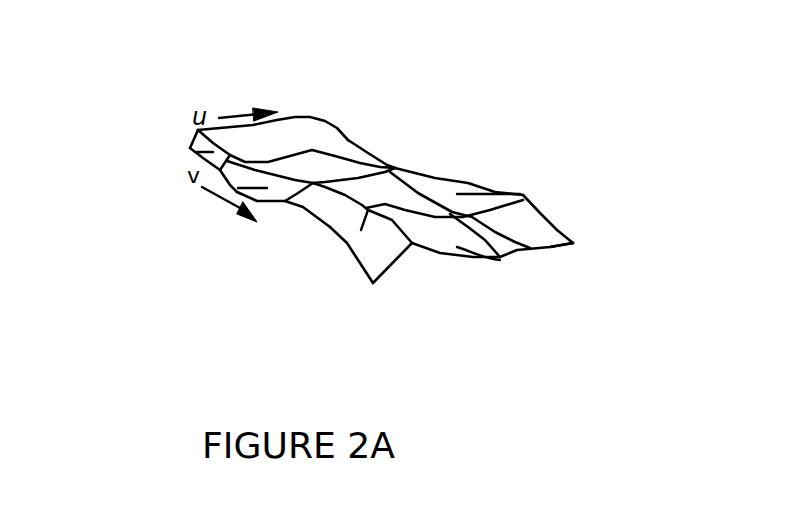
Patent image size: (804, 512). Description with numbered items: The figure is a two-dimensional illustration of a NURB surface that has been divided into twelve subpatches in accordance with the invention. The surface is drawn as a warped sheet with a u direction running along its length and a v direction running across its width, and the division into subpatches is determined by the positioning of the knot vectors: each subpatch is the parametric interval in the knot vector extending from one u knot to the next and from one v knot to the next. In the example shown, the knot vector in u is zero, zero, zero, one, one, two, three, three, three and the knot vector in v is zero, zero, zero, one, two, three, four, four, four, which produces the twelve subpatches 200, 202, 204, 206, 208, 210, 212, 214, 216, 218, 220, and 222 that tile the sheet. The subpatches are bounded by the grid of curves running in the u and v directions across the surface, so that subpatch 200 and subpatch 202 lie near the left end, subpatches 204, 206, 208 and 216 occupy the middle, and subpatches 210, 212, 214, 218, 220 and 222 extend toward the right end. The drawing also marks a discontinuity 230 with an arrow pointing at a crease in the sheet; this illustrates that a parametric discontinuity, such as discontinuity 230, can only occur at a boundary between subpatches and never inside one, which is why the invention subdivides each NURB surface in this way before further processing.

The subpatch 200 is at (190, 150).
The subpatch 202 is at (217, 190).
The subpatch 204 is at (318, 203).
The subpatch 206 is at (370, 257).
The subpatch 208 is at (240, 137).
The subpatch 210 is at (397, 167).
The subpatch 212 is at (403, 195).
The subpatch 214 is at (500, 257).
The subpatch 216 is at (303, 154).
The subpatch 218 is at (380, 149).
The subpatch 220 is at (517, 193).
The subpatch 222 is at (575, 245).
The discontinuity 230 is at (413, 247).